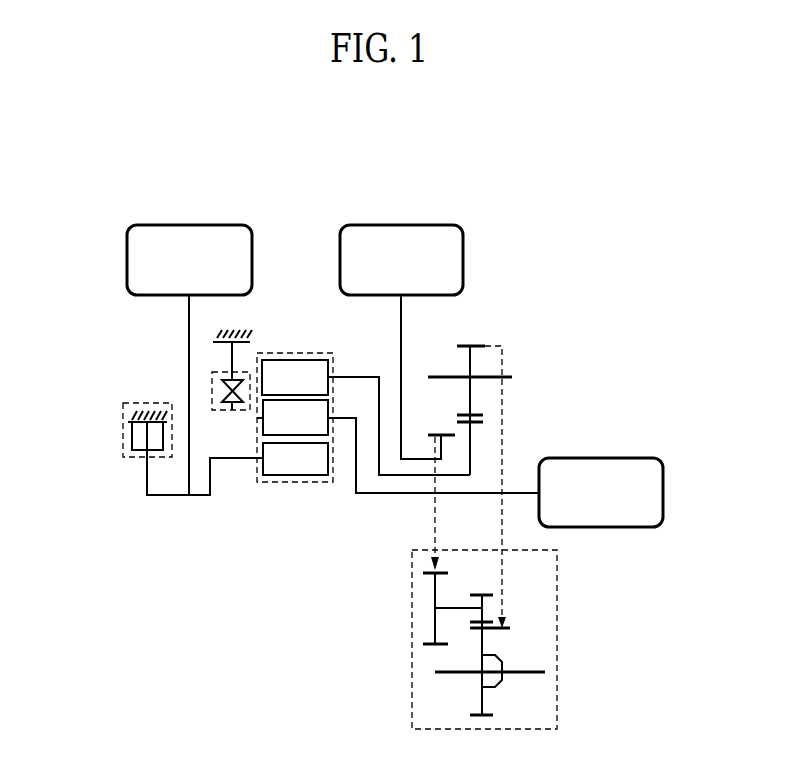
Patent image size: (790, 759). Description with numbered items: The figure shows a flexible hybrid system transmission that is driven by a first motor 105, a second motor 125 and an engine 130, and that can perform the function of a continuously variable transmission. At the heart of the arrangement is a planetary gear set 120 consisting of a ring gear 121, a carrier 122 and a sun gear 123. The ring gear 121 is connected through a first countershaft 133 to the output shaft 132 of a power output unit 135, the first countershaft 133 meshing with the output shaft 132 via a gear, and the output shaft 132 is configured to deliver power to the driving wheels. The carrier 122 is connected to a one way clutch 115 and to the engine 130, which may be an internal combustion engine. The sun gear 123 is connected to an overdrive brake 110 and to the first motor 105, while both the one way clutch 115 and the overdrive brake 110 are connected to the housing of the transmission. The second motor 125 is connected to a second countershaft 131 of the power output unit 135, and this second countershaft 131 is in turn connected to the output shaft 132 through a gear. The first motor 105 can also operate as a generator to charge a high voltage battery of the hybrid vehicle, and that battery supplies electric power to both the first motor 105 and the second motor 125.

The first motor 105 is at (188, 225).
The overdrive brake 110 is at (123, 430).
The one way clutch 115 is at (212, 383).
The planetary gear set 120 is at (297, 353).
The ring gear 121 is at (320, 358).
The carrier 122 is at (265, 437).
The sun gear 123 is at (299, 482).
The second motor 125 is at (401, 225).
The engine 130 is at (598, 458).
The second countershaft 131 is at (447, 608).
The output shaft 132 is at (458, 672).
The first countershaft 133 is at (488, 377).
The power output unit 135 is at (557, 638).